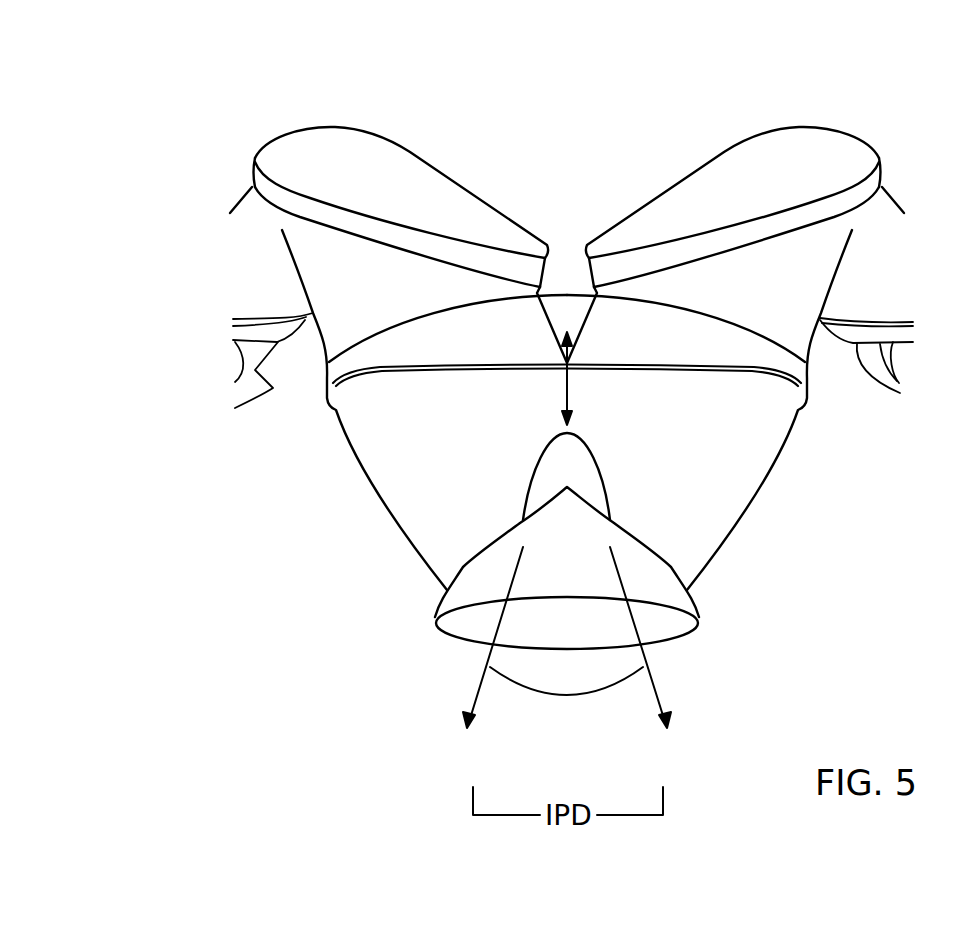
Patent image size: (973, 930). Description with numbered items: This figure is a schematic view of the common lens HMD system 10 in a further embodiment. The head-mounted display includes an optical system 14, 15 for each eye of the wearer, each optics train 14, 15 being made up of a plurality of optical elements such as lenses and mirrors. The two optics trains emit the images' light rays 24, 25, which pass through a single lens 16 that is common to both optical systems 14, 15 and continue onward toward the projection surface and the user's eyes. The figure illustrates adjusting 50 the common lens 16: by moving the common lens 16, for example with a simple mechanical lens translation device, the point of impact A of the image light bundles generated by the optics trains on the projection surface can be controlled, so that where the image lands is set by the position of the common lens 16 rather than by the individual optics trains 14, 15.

The common lens HMD system 10 is at (98, 163).
The optical system 14 is at (317, 92).
The optical system 15 is at (766, 189).
The common lens 16 is at (805, 365).
The light rays 24 is at (397, 280).
The light rays 25 is at (737, 280).
The adjusting 50 is at (567, 377).
The point of impact A is at (583, 700).